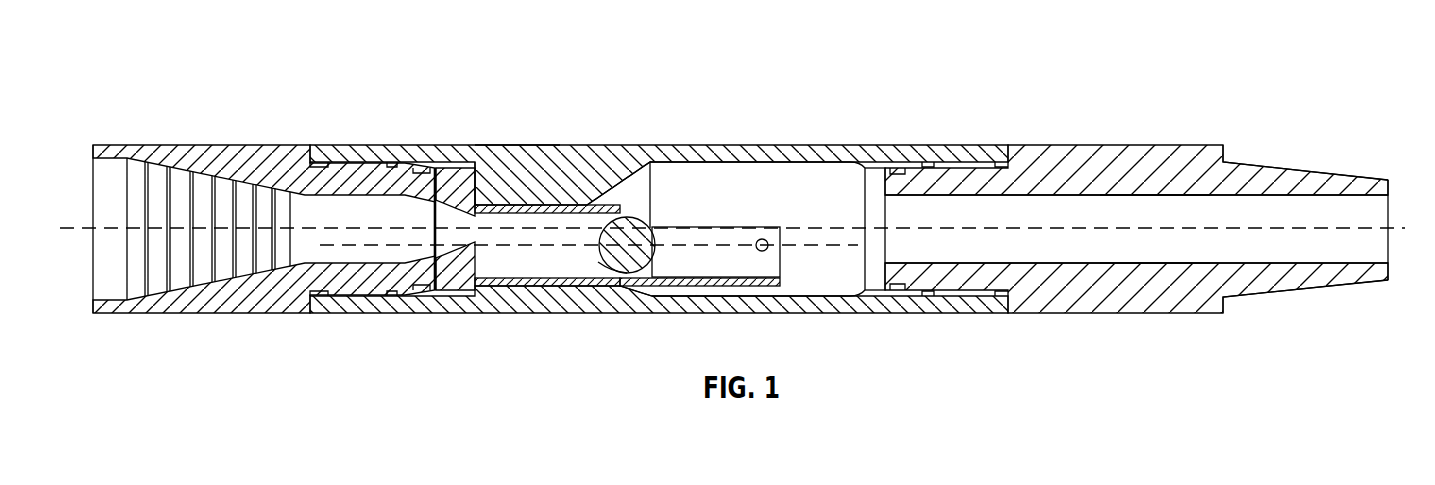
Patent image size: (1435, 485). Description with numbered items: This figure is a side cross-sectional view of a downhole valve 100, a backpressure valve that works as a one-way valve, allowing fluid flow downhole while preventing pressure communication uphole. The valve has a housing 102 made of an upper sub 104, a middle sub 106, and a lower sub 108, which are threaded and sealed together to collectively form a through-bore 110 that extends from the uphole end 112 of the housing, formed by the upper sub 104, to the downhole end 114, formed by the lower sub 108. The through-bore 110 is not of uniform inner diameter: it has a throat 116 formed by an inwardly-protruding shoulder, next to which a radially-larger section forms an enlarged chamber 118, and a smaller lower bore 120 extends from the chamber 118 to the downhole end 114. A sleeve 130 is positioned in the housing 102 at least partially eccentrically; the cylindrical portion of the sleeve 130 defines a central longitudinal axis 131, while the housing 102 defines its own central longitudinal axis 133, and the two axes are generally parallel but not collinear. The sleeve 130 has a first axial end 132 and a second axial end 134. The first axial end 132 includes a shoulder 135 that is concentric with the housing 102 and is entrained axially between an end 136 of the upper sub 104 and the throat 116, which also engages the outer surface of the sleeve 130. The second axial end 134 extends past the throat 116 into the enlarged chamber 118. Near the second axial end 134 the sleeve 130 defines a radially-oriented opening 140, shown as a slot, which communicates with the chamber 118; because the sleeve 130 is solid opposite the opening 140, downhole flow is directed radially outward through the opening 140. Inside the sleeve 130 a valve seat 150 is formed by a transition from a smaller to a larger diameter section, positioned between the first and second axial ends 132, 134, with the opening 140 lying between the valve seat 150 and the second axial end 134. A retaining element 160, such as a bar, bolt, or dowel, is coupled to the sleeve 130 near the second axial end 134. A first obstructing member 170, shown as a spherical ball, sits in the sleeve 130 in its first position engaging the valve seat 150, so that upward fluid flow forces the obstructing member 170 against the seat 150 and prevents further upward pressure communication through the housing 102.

The downhole valve 100 is at (176, 62).
The housing 102 is at (540, 145).
The upper sub 104 is at (243, 145).
The middle sub 106 is at (632, 158).
The lower sub 108 is at (1072, 158).
The through-bore 110 is at (1262, 212).
The uphole end 112 is at (86, 147).
The downhole end 114 is at (1388, 185).
The throat 116 is at (500, 182).
The enlarged chamber 118 is at (840, 173).
The lower bore 120 is at (1157, 212).
The sleeve 130 is at (455, 292).
The central longitudinal axis 131 is at (920, 232).
The first axial end 132 is at (395, 148).
The central longitudinal axis 133 is at (655, 245).
The second axial end 134 is at (783, 280).
The shoulder 135 is at (437, 166).
The end 136 is at (547, 245).
The opening 140 is at (727, 173).
The valve seat 150 is at (618, 210).
The retaining element 160 is at (764, 238).
The first obstructing member 170 is at (620, 262).